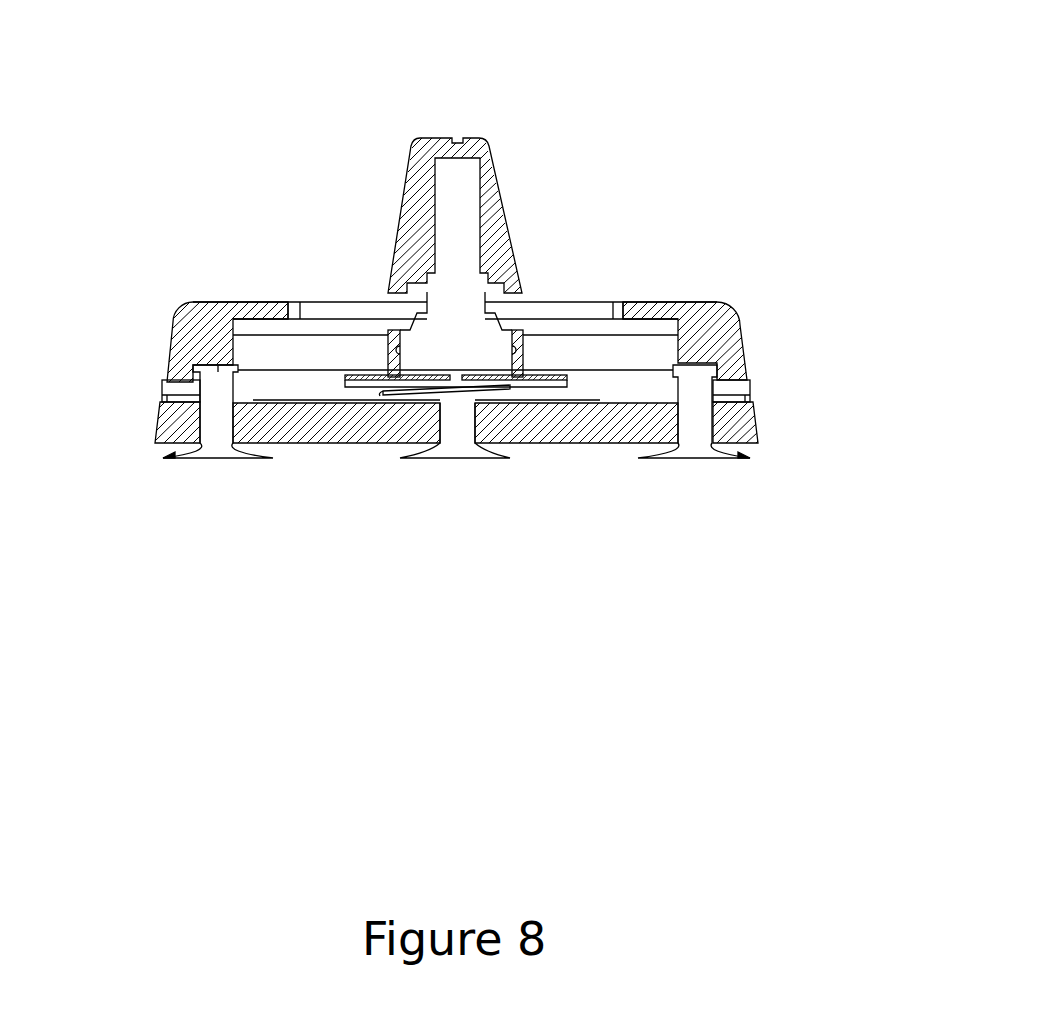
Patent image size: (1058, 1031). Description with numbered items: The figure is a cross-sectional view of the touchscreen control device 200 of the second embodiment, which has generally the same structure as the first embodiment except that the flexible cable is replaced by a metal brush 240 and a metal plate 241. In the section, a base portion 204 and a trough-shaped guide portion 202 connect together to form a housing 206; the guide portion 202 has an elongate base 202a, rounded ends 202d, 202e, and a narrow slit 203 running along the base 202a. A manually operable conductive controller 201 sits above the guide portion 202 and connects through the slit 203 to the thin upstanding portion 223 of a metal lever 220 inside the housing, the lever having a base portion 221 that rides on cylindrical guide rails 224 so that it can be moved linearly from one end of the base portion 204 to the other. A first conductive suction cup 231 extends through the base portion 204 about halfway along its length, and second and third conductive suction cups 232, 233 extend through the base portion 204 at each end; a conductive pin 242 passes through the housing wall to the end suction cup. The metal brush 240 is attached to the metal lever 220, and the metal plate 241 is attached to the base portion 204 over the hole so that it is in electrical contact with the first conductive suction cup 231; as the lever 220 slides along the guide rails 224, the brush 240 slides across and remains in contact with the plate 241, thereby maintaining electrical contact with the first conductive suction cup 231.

The touchscreen control device 200 is at (717, 67).
The cap 201 is at (488, 153).
The housing 202 is at (471, 309).
The top wall 202a is at (263, 315).
The left side wall 202d is at (188, 342).
The right side wall 202e is at (727, 347).
The channel 203 is at (368, 315).
The base portion 204 is at (765, 438).
The housing assembly 206 is at (723, 258).
The metal lever 220 is at (453, 287).
The valve tube 221 is at (465, 360).
The bore 223 is at (462, 222).
The cylindrical guide rails 224 is at (632, 352).
The first conductive suction cup 231 is at (458, 450).
The left suction cup 232 is at (215, 452).
The right suction cup 233 is at (688, 450).
The metal brush 240 is at (403, 398).
The metal plate 241 is at (167, 398).
The retaining ring 242 is at (743, 397).